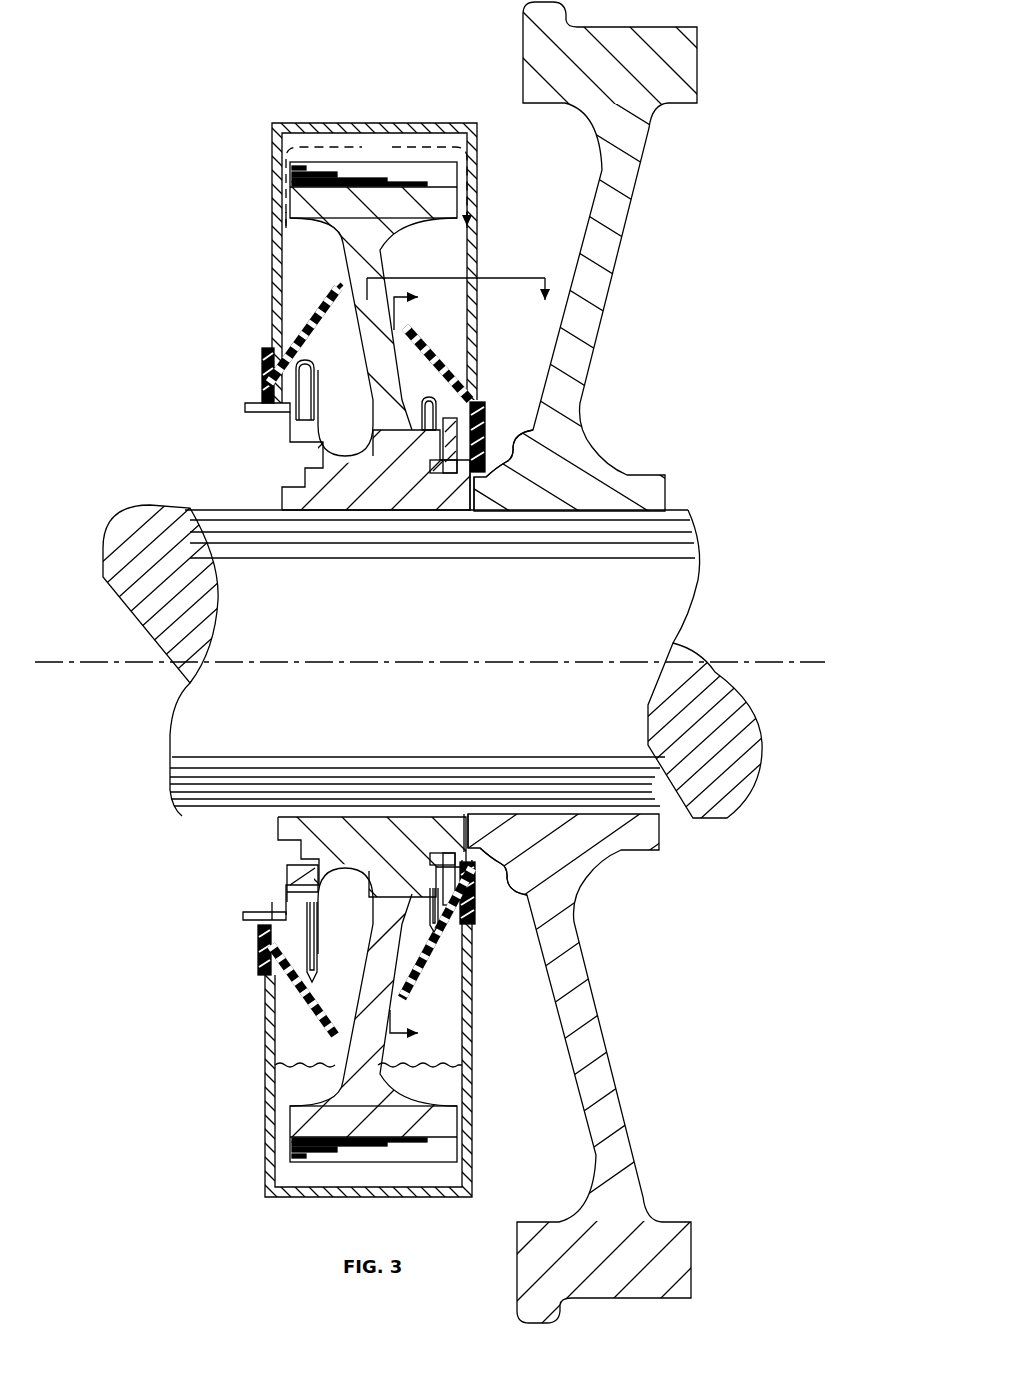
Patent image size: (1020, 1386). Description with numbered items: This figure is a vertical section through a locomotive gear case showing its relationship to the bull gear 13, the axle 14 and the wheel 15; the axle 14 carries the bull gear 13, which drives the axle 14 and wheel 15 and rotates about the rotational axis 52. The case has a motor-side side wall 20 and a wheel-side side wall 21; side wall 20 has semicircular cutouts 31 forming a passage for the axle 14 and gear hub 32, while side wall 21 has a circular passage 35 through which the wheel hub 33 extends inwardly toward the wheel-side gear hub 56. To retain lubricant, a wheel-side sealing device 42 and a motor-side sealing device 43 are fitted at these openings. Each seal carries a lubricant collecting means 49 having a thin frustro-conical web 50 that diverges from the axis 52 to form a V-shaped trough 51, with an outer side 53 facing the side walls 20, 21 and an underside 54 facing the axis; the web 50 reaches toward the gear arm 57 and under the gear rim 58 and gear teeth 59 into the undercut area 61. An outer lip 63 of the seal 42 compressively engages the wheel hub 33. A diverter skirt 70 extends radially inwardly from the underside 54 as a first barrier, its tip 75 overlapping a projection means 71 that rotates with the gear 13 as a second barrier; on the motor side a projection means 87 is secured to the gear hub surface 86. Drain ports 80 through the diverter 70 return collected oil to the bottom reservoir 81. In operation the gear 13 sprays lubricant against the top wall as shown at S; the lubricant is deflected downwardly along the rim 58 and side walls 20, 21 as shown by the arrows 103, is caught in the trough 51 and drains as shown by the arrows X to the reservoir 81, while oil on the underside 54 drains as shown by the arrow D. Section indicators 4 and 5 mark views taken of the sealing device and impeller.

The bull gear 13 is at (356, 216).
The lubricant splash S is at (412, 146).
The axle 14 is at (165, 737).
The wheel 15 is at (630, 228).
The gear case side wall 20 is at (272, 148).
The gear case side wall 21 is at (477, 235).
The semicircular cutouts 31 is at (268, 412).
The gear hub 32 is at (305, 488).
The wheel hub 33 is at (480, 480).
The circular passage 35 is at (472, 515).
The wheel-side sealing device 42 is at (485, 410).
The motor-side sealing device 43 is at (258, 372).
The lubricant collecting means 49 is at (312, 285).
The web or leaf 50 is at (306, 322).
The V-shaped trough or channel 51 is at (298, 315).
The rotational axis 52 is at (580, 660).
The outer or upper side of web 53 is at (338, 288).
The inner or underside wall of web 54 is at (328, 312).
The gear hub (wheel side) 56 is at (460, 515).
The gear arm 57 is at (379, 388).
The gear rim 58 is at (290, 178).
The gear teeth 59 is at (447, 175).
The undercut area 61 is at (432, 240).
The outer lip 63 is at (492, 462).
The diverter (shroud or skirt) 70 is at (317, 388).
The projection means (impeller) 71 is at (440, 456).
The diverter tip 75 is at (316, 420).
The drain ports 80 is at (322, 984).
The bottom reservoir 81 is at (447, 1086).
The gear hub motor side surface 86 is at (322, 478).
The motor side projection means 87 is at (285, 888).
The arrows indicating lubricant flow 103 is at (283, 212).
The section line for FIG. 4 is at (412, 665).
The section line for FIG. 5 is at (456, 309).
The drainage arrow D is at (340, 1018).
The drainage arrows X is at (318, 1042).